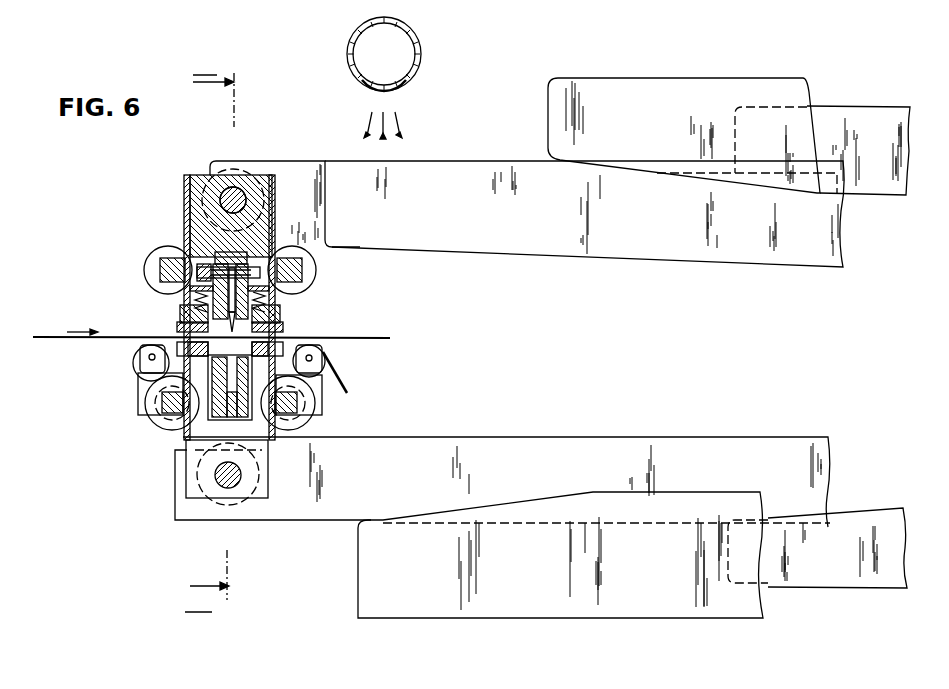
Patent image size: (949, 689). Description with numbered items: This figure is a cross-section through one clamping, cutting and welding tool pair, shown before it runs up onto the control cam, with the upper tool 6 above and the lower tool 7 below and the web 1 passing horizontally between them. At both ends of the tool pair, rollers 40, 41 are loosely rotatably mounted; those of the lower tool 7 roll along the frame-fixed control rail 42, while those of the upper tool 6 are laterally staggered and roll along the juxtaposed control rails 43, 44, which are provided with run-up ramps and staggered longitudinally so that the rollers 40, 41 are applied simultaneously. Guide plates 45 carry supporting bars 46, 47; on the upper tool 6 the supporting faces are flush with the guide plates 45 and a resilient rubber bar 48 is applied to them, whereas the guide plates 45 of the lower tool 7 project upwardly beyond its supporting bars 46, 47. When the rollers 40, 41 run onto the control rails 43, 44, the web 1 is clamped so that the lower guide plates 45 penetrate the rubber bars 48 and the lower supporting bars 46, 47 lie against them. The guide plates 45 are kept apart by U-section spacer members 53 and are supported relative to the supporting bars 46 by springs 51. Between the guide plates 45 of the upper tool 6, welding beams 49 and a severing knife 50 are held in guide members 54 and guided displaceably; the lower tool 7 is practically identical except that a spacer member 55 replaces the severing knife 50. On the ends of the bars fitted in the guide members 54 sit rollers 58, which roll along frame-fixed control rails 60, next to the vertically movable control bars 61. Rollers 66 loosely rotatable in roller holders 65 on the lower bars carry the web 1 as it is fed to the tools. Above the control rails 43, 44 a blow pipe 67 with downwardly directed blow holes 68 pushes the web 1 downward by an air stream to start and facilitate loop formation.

The web 1 is at (46, 337).
The upper tool 6 is at (253, 130).
The lower tool 7 is at (248, 541).
The roller 40 is at (148, 266).
The roller 41 is at (314, 274).
The control rail 42 is at (415, 439).
The control rail 43 is at (282, 170).
The control rail 44 is at (428, 172).
The guide plate 45 is at (188, 238).
The supporting bar 46 is at (188, 347).
The supporting bar 47 is at (180, 322).
The rubber bar 48 is at (285, 330).
The welding beam 49 is at (203, 296).
The severing knife 50 is at (216, 259).
The spring 51 is at (192, 290).
The spacer member 53 is at (258, 436).
The guide member 54 is at (188, 187).
The spacer member 55 is at (230, 415).
The roller 58 is at (233, 171).
The control rail 60 is at (607, 85).
The control bar 61 is at (855, 114).
The roller holder 65 is at (146, 388).
The roller 66 is at (138, 354).
The blow pipe 67 is at (423, 58).
The blow hole 68 is at (397, 88).